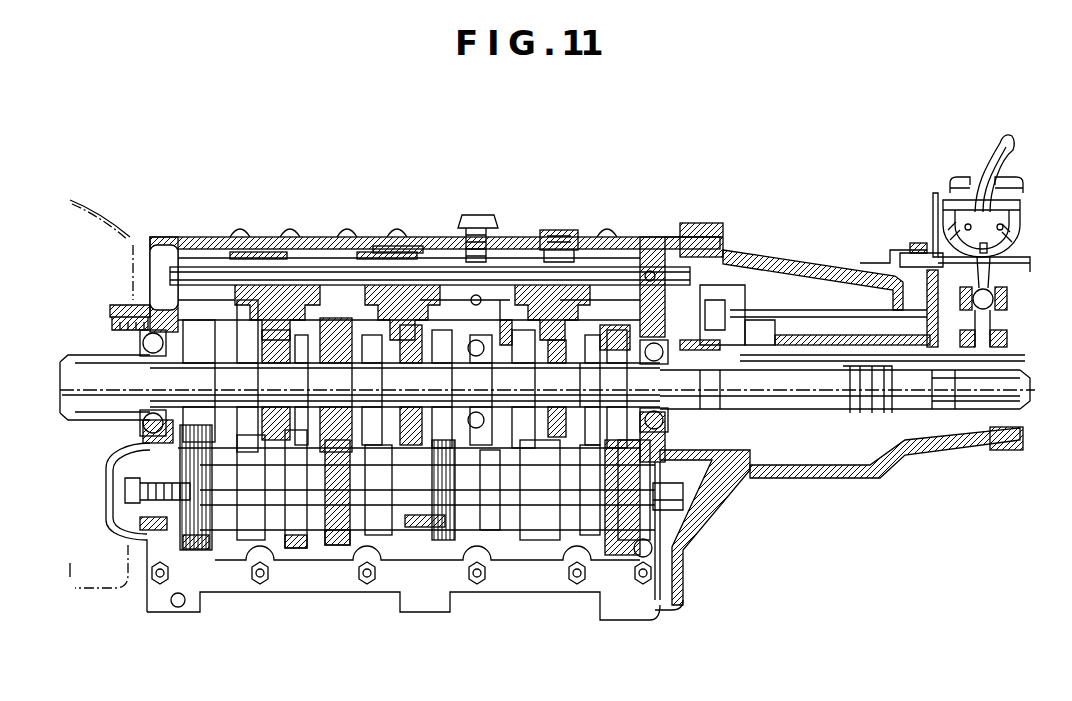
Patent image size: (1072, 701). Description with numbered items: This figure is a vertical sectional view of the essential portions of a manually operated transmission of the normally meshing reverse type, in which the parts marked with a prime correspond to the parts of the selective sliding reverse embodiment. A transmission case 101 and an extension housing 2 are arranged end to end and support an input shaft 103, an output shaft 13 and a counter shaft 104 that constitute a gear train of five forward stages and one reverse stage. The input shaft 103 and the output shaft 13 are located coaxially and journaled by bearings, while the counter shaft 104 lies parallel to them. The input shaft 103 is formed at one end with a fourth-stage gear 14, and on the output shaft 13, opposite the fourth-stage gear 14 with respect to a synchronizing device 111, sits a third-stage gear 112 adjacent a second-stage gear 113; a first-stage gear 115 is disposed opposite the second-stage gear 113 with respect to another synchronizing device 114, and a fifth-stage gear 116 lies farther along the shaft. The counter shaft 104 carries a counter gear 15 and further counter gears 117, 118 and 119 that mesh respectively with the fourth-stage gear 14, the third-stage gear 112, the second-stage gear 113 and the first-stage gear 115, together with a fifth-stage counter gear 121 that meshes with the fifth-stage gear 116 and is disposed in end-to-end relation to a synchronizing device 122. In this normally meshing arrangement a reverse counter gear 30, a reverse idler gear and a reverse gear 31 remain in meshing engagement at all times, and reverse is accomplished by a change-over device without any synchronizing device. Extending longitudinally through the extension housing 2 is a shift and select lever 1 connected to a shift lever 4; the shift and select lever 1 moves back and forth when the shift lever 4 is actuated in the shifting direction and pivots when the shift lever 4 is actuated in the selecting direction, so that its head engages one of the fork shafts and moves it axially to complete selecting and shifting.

The shift and select lever 1 is at (808, 323).
The extension housing 2 is at (790, 265).
The shift lever 4 is at (992, 153).
The output shaft 13 is at (777, 393).
The fourth-stage gear 14 is at (190, 337).
The counter gear 15 is at (200, 560).
The reverse counter gear 30 is at (513, 523).
The reverse gear 31 is at (513, 320).
The transmission case 101 is at (392, 300).
The input shaft 103 is at (80, 373).
The counter shaft 104 is at (227, 503).
The synchronizing device 111 is at (229, 303).
The third-stage gear 112 is at (290, 323).
The second-stage gear 113 is at (330, 320).
The synchronizing device 114 is at (347, 297).
The first-stage gear 115 is at (440, 300).
The fifth-stage gear 116 is at (740, 325).
The counter gear 117 is at (300, 543).
The counter gear 118 is at (337, 543).
The counter gear 119 is at (430, 527).
The fifth-stage counter gear 121 is at (617, 563).
The synchronizing device 122 is at (617, 340).